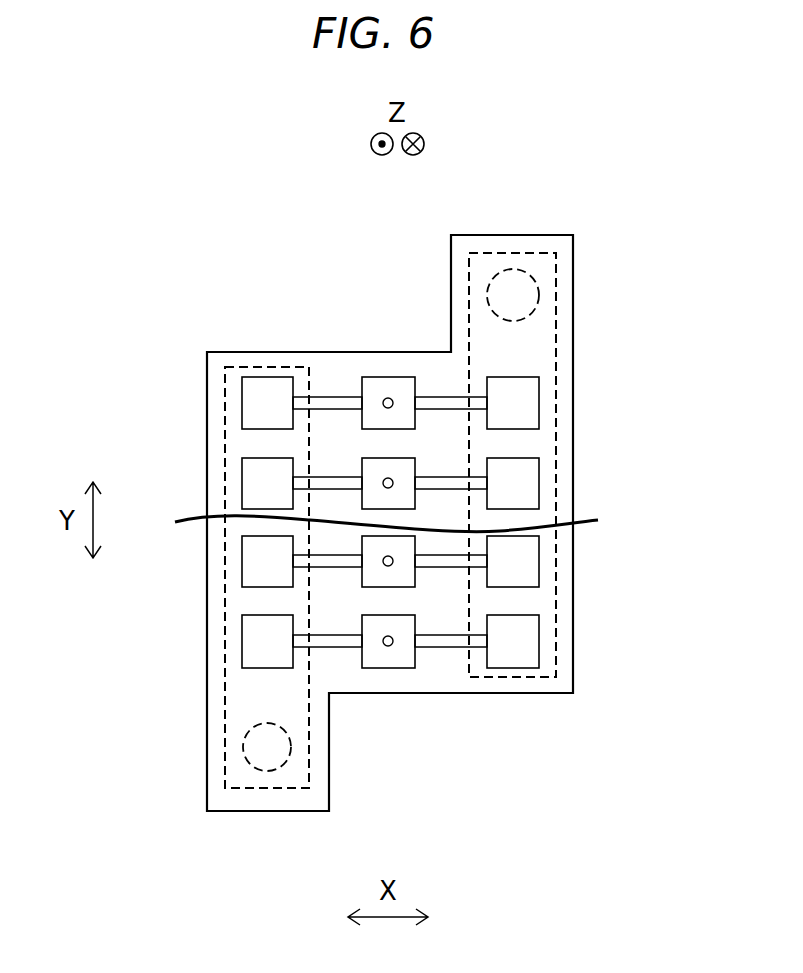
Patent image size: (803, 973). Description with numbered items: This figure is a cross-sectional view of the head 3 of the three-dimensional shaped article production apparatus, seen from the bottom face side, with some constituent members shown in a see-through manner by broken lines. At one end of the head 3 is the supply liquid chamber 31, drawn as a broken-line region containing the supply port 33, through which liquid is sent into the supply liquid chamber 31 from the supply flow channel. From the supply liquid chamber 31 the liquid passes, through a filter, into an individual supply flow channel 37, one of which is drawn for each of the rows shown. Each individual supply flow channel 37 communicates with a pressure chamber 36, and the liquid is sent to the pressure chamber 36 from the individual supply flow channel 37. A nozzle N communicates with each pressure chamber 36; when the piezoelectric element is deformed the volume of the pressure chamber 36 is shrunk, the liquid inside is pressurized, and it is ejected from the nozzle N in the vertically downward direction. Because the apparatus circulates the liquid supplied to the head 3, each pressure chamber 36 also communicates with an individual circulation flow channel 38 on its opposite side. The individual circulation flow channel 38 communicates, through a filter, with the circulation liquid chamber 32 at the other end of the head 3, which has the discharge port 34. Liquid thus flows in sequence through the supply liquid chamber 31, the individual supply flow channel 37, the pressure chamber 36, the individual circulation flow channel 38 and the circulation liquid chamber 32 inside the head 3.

The head 3 is at (628, 196).
The supply liquid chamber 31 is at (556, 305).
The circulation liquid chamber 32 is at (225, 727).
The supply port 33 is at (518, 269).
The discharge port 34 is at (260, 771).
The pressure chamber 36 is at (379, 377).
The individual supply flow channel 37 is at (524, 377).
The individual circulation flow channel 38 is at (270, 430).
The nozzle N is at (393, 404).